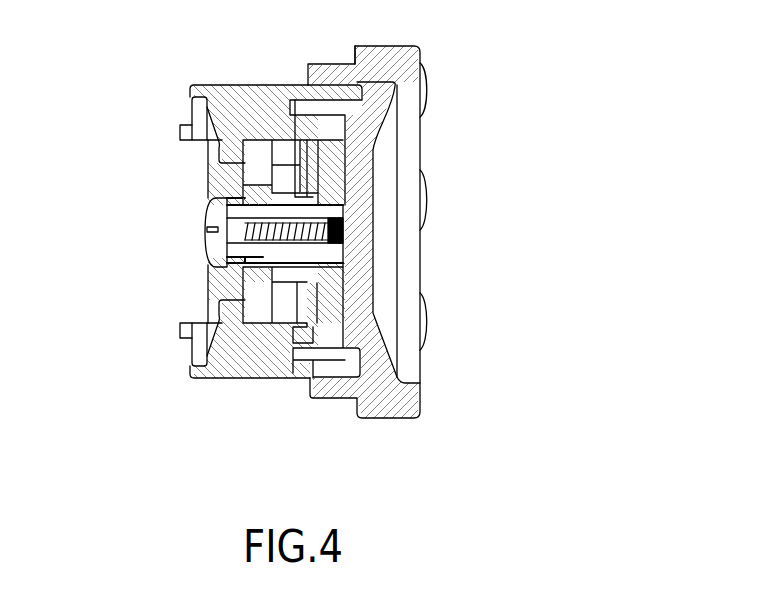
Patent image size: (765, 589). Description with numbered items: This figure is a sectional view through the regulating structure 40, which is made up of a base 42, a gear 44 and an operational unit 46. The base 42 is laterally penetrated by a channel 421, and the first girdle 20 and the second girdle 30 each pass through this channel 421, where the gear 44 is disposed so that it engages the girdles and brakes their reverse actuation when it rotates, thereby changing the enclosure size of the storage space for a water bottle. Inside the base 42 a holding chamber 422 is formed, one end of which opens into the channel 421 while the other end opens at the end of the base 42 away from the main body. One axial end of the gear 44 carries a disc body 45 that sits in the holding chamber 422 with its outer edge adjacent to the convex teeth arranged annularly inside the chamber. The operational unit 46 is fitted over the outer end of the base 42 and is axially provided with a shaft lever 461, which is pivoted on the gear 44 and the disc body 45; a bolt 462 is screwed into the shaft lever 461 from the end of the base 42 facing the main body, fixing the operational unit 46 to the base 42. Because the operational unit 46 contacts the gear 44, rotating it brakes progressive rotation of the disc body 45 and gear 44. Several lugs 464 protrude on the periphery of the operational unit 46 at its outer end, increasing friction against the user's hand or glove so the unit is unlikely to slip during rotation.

The regulating structure 40 is at (500, 78).
The base 42 is at (222, 92).
The channel 421 is at (267, 140).
The holding chamber 422 is at (330, 100).
The operational unit 46 is at (407, 268).
The lug 464 is at (427, 203).
The disc body 45 is at (330, 155).
The second girdle 30 is at (292, 163).
The first girdle 20 is at (258, 307).
The bolt 462 is at (215, 218).
The shaft lever 461 is at (240, 246).
The gear 44 is at (257, 260).